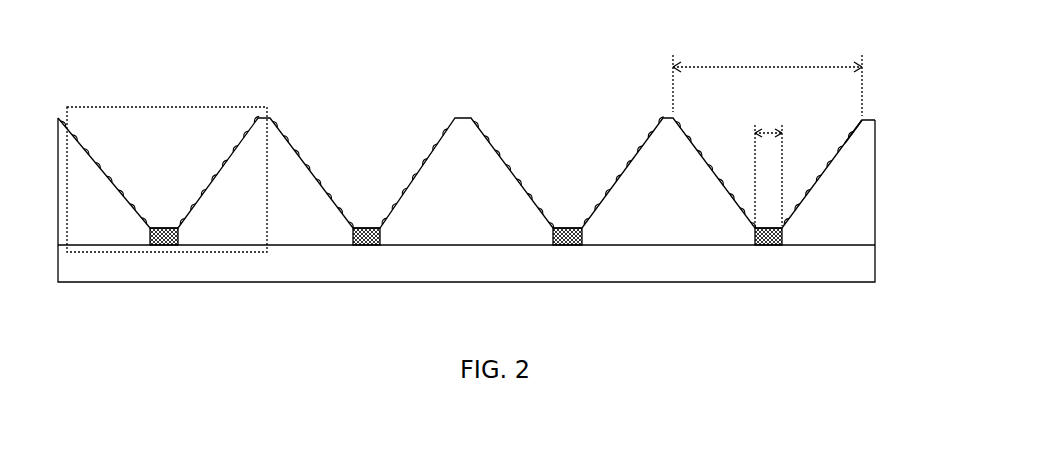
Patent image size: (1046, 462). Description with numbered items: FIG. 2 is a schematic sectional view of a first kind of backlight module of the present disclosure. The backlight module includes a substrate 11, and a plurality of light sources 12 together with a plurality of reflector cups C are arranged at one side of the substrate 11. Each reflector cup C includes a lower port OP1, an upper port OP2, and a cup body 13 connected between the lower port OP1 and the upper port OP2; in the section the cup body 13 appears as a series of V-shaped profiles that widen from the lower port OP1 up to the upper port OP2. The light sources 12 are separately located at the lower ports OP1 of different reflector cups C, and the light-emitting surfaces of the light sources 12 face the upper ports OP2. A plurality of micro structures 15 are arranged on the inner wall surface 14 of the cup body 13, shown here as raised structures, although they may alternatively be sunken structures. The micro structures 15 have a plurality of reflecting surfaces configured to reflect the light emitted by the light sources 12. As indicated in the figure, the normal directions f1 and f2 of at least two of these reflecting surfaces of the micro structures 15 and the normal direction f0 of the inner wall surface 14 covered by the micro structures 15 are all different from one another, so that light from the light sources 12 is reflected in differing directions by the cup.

The substrate 11 is at (828, 263).
The light source 12 is at (768, 245).
The cup body 13 is at (852, 212).
The inner wall surface 14 is at (824, 172).
The micro structure 15 is at (842, 138).
The reflector cup C is at (92, 107).
The lower port OP1 is at (777, 162).
The upper port OP2 is at (767, 77).
The normal direction of the inner wall surface f0 is at (840, 135).
The normal direction of a reflecting surface f1 is at (840, 136).
The normal direction of a reflecting surface f2 is at (842, 133).